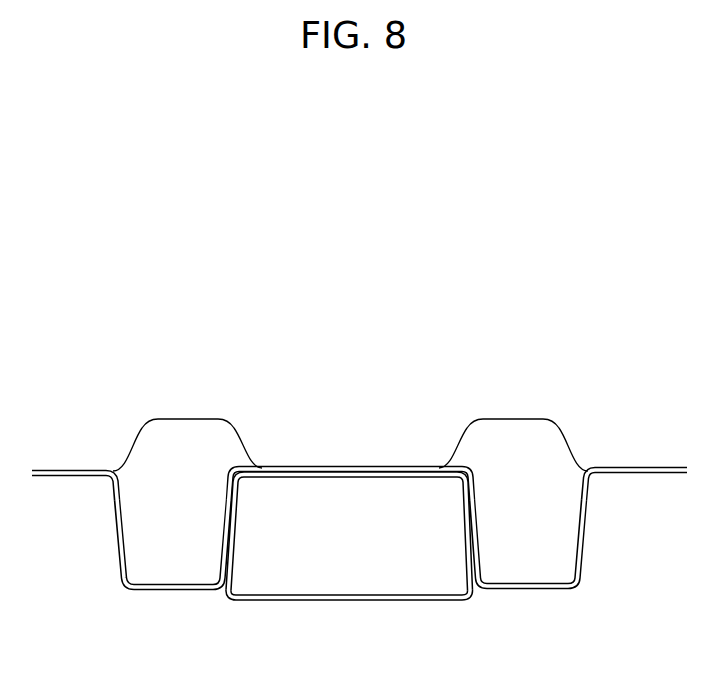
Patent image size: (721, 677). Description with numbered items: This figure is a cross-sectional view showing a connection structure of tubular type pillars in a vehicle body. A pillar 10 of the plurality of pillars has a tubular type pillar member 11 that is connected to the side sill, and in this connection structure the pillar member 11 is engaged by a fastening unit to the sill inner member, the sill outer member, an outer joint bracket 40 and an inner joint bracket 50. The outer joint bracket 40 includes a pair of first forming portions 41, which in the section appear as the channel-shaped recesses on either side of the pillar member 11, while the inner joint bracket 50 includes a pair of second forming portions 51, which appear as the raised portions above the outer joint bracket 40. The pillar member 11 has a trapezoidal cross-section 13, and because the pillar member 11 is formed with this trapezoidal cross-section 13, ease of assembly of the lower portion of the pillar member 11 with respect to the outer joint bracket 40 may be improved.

The pillar 10 is at (370, 616).
The pillar member 11 is at (304, 601).
The trapezoidal cross-section 13 is at (347, 514).
The outer joint bracket 40 is at (102, 515).
The first forming portion 41 is at (177, 590).
The inner joint bracket 50 is at (575, 400).
The second forming portion 51 is at (186, 418).